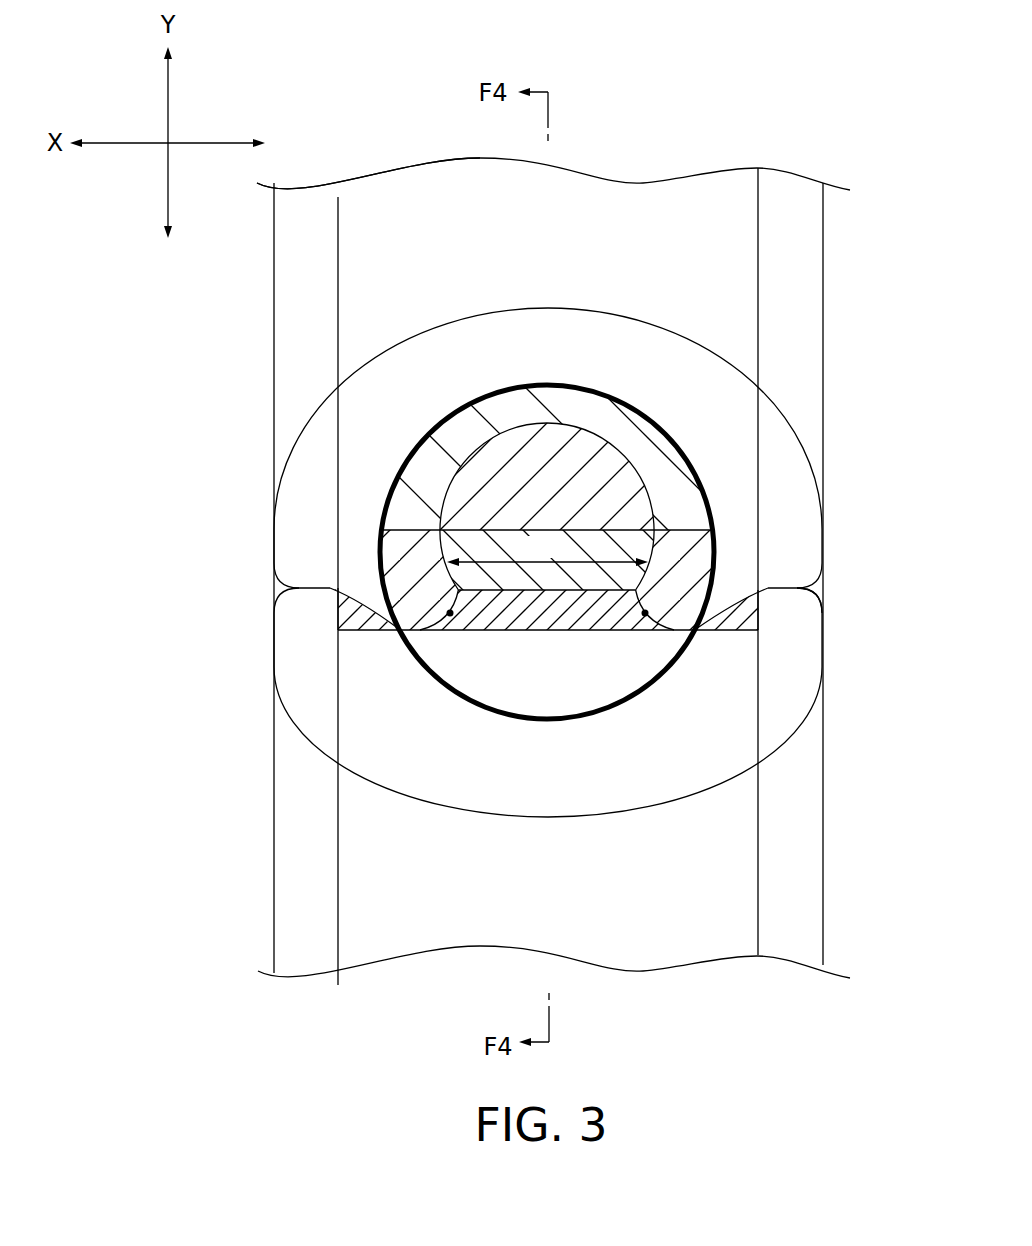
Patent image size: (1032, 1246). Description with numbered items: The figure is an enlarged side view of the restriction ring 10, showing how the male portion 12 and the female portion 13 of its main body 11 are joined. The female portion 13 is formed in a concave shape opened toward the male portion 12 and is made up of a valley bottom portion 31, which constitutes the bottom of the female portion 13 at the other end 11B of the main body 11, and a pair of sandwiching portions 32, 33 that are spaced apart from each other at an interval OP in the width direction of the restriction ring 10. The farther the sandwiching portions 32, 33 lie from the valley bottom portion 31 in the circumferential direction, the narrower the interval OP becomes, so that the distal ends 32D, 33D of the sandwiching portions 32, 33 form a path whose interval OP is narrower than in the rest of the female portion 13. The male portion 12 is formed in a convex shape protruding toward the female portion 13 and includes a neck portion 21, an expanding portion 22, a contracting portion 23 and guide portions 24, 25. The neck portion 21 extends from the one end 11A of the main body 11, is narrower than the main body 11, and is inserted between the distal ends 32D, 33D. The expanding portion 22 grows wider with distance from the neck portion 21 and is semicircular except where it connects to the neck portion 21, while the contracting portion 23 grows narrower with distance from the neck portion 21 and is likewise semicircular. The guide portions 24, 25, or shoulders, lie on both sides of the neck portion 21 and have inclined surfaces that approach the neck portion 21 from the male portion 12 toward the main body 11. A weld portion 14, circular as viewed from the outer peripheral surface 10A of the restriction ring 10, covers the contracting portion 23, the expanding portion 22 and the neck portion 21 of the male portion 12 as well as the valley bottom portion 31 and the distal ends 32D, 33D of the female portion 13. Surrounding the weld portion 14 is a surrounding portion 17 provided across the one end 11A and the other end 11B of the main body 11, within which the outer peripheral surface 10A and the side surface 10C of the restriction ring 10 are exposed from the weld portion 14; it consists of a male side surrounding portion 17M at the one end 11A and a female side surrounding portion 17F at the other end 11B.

The restriction ring 10 is at (413, 168).
The outer peripheral surface 10A is at (690, 226).
The side surface 10C is at (823, 300).
The main body 11 is at (623, 195).
The one end of the main body 11A is at (813, 597).
The other end of the main body 11B is at (813, 580).
The male portion 12 is at (543, 645).
The female portion 13 is at (554, 371).
The weld portion 14 is at (458, 407).
The surrounding portion 17 is at (193, 420).
The female side surrounding portion 17F is at (548, 468).
The male side surrounding portion 17M is at (546, 702).
The neck portion 21 is at (510, 622).
The expanding portion 22 is at (583, 582).
The contracting portion 23 is at (585, 468).
The guide portion 24 is at (737, 623).
The guide portion 25 is at (360, 621).
The valley bottom portion 31 is at (603, 407).
The sandwiching portion 32 is at (698, 570).
The distal end of sandwiching portion 32D is at (645, 616).
The sandwiching portion 33 is at (395, 575).
The distal end of sandwiching portion 33D is at (450, 616).
The interval OP is at (547, 550).